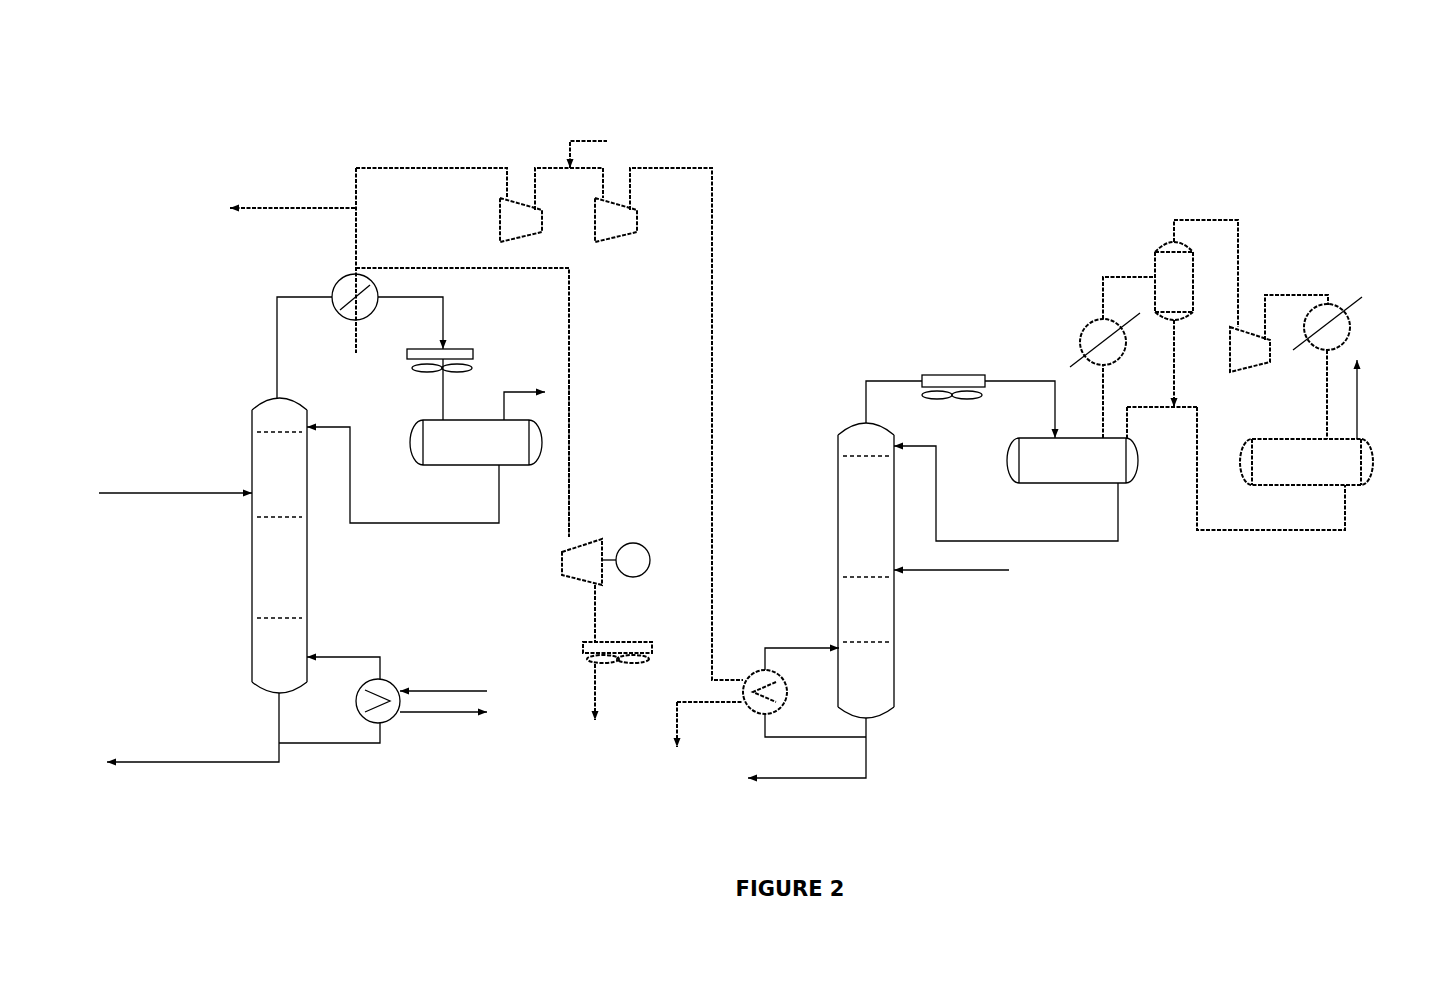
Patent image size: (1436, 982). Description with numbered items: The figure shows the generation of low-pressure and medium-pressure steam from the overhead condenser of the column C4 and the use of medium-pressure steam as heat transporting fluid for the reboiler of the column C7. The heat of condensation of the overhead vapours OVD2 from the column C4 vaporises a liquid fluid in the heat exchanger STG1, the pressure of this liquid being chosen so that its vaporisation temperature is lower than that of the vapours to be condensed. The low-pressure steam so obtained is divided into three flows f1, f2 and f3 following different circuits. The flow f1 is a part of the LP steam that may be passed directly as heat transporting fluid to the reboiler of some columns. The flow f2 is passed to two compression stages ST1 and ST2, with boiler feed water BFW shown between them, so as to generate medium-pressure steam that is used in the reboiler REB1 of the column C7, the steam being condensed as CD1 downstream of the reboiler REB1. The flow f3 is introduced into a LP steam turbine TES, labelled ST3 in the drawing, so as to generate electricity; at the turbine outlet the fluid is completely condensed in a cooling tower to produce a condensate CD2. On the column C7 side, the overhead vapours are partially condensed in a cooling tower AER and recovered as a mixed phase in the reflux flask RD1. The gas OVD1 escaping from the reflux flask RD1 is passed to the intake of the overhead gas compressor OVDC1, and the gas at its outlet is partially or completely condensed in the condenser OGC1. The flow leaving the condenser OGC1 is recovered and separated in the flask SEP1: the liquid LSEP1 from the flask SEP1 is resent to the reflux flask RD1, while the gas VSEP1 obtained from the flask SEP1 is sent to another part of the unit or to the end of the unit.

The column C4 is at (293, 582).
The overhead vapours OVD2 is at (379, 410).
The heat exchanger STG1 is at (339, 260).
The flow f1 is at (276, 209).
The flow f2 is at (549, 425).
The flow f3 is at (477, 475).
The compression stage ST1 is at (519, 189).
The compression stage ST2 is at (629, 189).
The steam turbine 3 ST3 is at (593, 452).
The boiler feed water BFW is at (596, 148).
The LP steam turbine TES is at (580, 562).
The condensate CD2 is at (616, 667).
The condensed steam CD1 is at (684, 739).
The reboiler REB1 is at (804, 677).
The column C7 is at (878, 602).
The cooling tower AER is at (962, 394).
The reflux flask RD1 is at (1016, 489).
The gas OVD1 is at (1155, 316).
The overhead gas compressor OVDC1 is at (1273, 345).
The condenser OGC1 is at (1316, 349).
The flask SEP1 is at (1306, 462).
The gas VSEP1 is at (1387, 399).
The liquid LSEP1 is at (1271, 482).